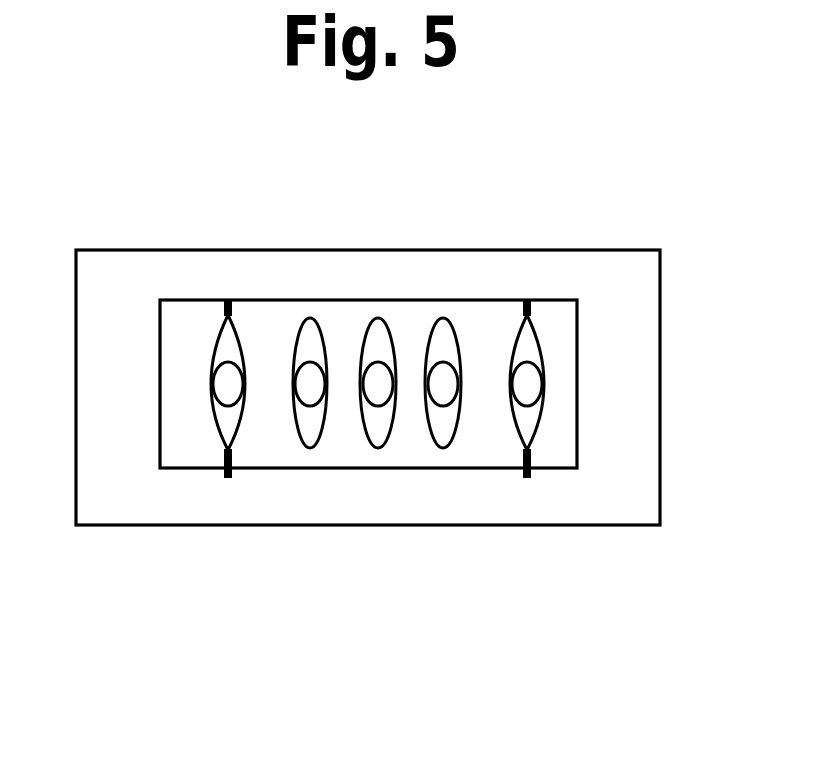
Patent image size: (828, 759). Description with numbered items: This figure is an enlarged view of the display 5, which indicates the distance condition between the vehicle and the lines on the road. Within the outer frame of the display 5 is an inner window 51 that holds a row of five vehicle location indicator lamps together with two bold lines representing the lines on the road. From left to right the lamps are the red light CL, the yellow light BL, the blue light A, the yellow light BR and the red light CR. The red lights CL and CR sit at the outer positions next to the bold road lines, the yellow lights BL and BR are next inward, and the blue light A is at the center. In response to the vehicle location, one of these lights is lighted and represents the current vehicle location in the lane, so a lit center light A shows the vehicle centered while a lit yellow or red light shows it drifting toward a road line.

The display 5 is at (474, 249).
The display window 51 is at (562, 332).
The left red light CL is at (241, 402).
The left yellow light BL is at (322, 403).
The blue light A is at (389, 403).
The right yellow light BR is at (452, 404).
The right red light CR is at (535, 405).